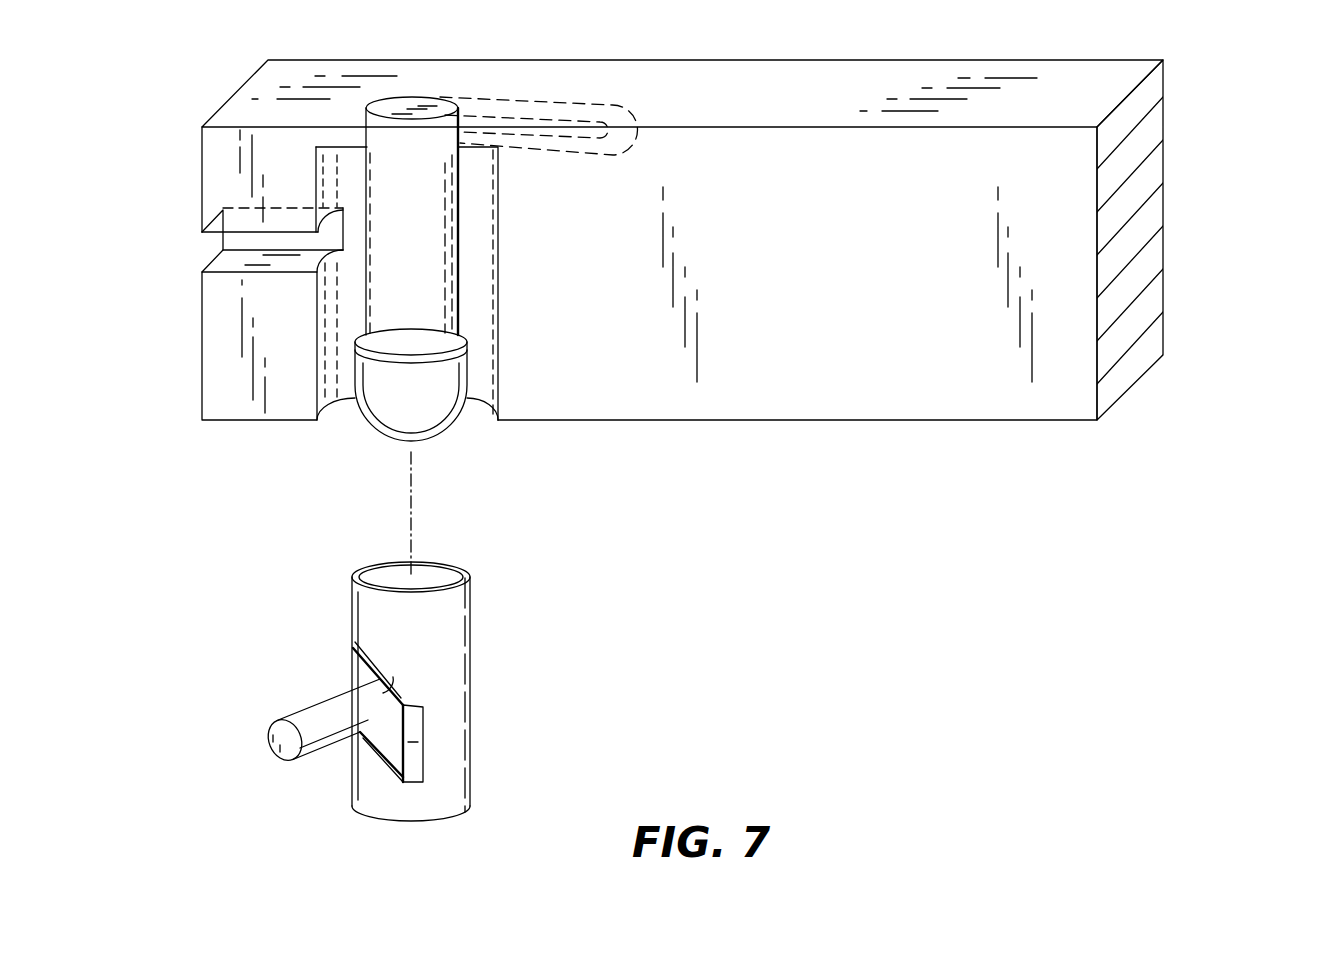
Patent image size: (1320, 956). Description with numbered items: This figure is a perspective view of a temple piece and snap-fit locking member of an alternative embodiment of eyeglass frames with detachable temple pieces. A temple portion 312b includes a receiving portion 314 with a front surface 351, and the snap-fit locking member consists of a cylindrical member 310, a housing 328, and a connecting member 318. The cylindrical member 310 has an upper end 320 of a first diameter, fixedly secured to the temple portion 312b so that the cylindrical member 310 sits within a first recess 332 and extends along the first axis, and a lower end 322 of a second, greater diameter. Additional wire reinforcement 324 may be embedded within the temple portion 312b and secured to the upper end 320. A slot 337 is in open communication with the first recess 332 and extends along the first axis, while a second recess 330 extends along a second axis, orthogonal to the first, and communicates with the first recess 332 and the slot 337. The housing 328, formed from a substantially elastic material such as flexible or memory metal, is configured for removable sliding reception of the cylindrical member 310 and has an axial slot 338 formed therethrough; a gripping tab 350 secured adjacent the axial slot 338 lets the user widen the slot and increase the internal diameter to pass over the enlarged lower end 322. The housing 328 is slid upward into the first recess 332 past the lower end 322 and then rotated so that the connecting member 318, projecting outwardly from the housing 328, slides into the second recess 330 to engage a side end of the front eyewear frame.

The receiving portion 314 is at (846, 76).
The temple portion 312b is at (1217, 160).
The front surface 351 is at (892, 250).
The second recess 330 is at (200, 248).
The first recess 332 is at (335, 433).
The slot 337 is at (478, 264).
The cylindrical member 310 is at (460, 213).
The upper end 320 is at (405, 100).
The wire reinforcement 324 is at (593, 53).
The lower end 322 is at (462, 367).
The housing 328 is at (277, 602).
The axial slot 338 is at (345, 785).
The gripping tab 350 is at (423, 707).
The connecting member 318 is at (290, 720).